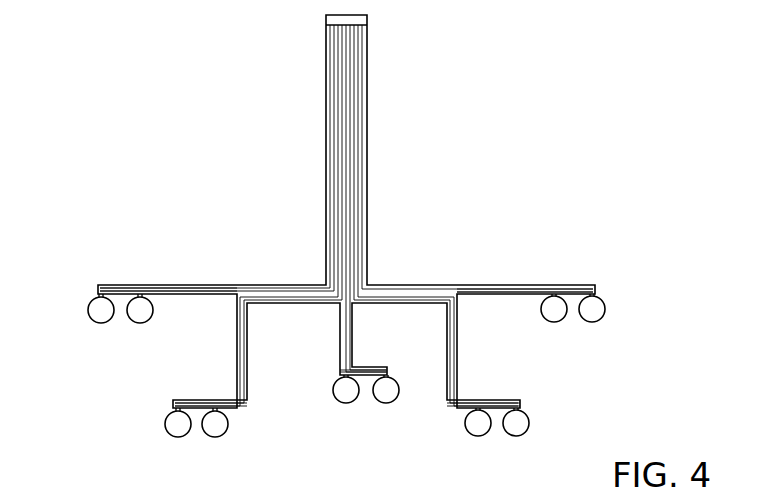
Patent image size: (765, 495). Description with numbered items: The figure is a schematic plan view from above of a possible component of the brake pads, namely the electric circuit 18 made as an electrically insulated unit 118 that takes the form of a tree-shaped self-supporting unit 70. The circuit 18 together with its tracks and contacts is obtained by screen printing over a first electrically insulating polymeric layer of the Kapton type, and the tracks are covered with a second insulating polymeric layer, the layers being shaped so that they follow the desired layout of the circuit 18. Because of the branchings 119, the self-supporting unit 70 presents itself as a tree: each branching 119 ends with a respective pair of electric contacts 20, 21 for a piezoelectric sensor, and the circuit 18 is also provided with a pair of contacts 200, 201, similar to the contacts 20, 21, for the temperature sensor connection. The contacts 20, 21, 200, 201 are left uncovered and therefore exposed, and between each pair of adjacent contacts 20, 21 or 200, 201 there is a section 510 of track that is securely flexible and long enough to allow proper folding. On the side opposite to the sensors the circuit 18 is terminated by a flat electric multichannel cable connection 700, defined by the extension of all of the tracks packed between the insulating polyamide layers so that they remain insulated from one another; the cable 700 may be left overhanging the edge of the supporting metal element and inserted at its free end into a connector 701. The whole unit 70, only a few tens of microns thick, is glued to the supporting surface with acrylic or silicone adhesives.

The electrically insulated unit 118 is at (507, 120).
The self-supporting unit 70 is at (347, 155).
The flat electric multichannel cable connection 700 is at (348, 127).
The connector 701 is at (367, 20).
The electric circuit 18 is at (353, 216).
The branching 119 is at (111, 270).
The section of track 510 is at (118, 285).
The electric contact 20 is at (140, 313).
The electric contact 21 is at (99, 313).
The contact 200 is at (345, 395).
The contact 201 is at (386, 395).